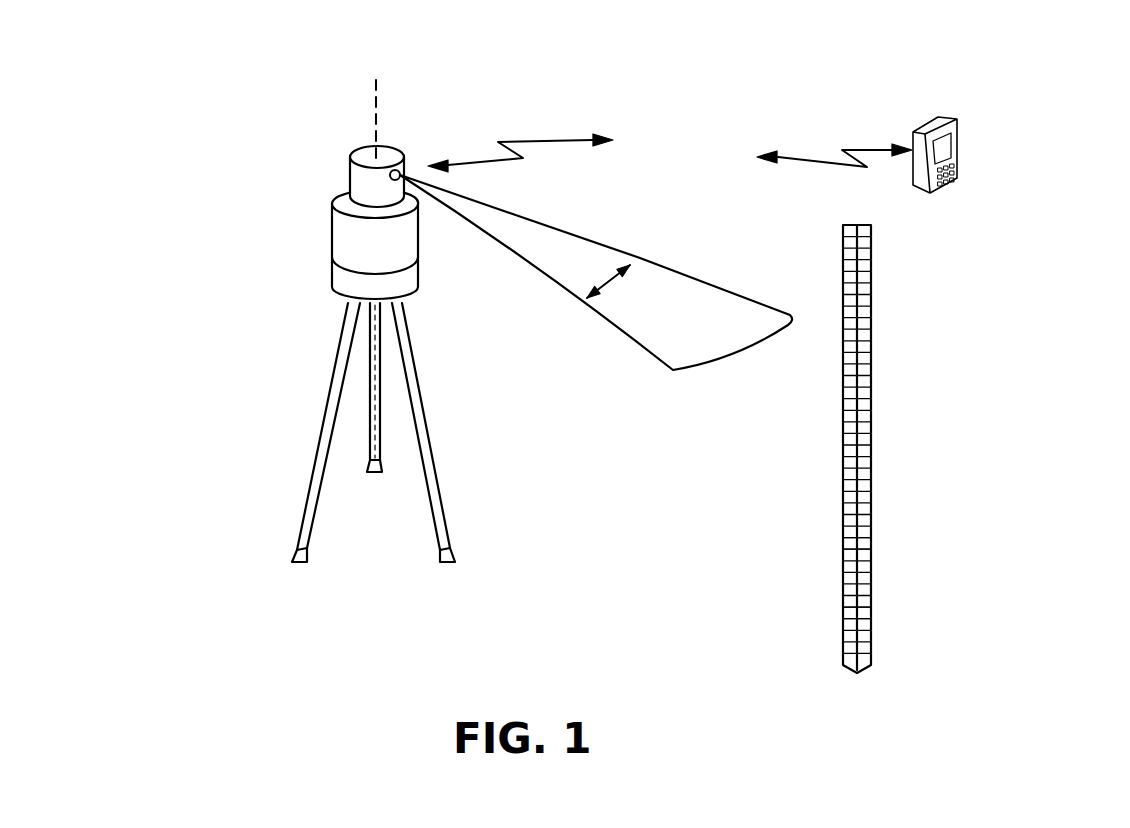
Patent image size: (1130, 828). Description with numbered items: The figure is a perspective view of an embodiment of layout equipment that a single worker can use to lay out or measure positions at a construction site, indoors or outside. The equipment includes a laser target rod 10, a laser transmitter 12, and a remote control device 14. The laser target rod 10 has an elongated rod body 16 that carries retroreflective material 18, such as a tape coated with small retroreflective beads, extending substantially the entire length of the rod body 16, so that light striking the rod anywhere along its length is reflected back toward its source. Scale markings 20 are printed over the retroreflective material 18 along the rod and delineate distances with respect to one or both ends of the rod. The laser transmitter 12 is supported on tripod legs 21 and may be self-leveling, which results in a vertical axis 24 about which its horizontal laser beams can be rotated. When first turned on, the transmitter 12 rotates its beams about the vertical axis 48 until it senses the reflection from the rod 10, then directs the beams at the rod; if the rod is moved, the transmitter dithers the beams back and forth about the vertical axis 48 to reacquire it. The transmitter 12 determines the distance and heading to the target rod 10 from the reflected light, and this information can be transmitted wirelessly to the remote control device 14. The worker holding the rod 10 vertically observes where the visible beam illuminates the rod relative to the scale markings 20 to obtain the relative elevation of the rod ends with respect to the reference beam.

The laser target rod 10 is at (889, 428).
The laser transmitter 12 is at (305, 222).
The remote control device 14 is at (980, 136).
The rod body 16 is at (858, 226).
The retroreflective material 18 is at (850, 543).
The scale markings 20 is at (848, 607).
The tripod legs 21 is at (305, 508).
The vertical axis 24 is at (385, 87).
The vertical axis 48 is at (367, 120).